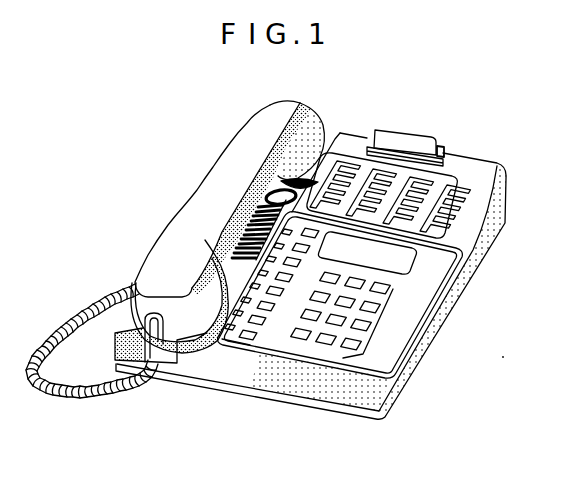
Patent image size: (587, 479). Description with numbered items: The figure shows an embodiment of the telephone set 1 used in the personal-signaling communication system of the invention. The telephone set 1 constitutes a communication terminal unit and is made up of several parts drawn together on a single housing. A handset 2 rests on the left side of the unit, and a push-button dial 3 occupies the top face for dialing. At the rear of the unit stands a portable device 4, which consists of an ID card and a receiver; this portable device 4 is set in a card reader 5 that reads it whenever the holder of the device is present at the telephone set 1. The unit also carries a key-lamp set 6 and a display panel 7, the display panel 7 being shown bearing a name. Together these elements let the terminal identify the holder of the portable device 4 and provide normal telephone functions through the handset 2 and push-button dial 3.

The telephone set 1 is at (402, 395).
The handset 2 is at (301, 104).
The push-button dial 3 is at (385, 318).
The portable device 4 is at (421, 131).
The card reader 5 is at (441, 148).
The key-lamp set 6 is at (497, 166).
The display panel 7 is at (413, 262).